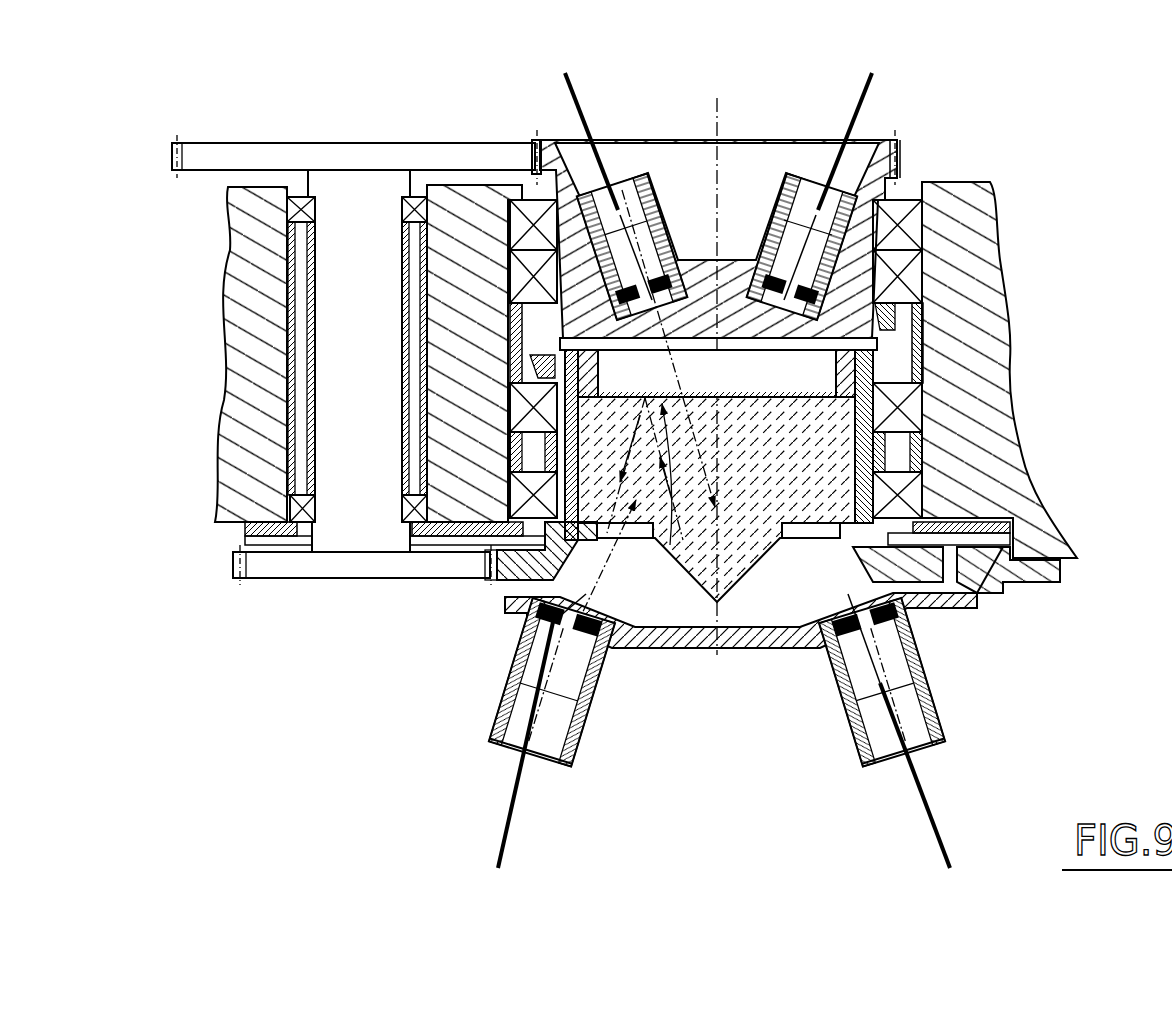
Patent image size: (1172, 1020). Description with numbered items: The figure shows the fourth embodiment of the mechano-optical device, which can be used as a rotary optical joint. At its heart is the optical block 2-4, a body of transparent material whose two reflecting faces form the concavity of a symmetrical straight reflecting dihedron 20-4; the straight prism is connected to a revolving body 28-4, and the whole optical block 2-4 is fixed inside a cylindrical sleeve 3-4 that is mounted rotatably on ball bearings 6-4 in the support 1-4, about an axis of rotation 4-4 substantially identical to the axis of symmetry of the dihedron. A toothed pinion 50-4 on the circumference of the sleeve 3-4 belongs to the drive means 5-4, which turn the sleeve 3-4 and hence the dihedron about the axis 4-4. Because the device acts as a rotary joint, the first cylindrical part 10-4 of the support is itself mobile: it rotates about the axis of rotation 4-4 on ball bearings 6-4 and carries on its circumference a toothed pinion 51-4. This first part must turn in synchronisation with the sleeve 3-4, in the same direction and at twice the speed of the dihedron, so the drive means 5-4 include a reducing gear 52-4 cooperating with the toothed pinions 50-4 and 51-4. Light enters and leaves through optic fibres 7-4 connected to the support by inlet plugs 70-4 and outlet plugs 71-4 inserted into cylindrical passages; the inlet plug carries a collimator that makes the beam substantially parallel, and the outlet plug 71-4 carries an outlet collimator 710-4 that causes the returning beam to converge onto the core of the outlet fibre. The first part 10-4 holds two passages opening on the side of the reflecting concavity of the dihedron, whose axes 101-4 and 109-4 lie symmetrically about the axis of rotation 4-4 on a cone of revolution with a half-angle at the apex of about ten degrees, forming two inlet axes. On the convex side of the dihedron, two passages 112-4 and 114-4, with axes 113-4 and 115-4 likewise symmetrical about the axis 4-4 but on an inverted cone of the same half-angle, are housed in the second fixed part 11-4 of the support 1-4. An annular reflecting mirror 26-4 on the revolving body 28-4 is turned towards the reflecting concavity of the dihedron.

The support 1-4 is at (992, 327).
The optical block 2-4 is at (814, 492).
The cylindrical sleeve 3-4 is at (935, 600).
The axis of rotation 4-4 is at (717, 100).
The drive means 5-4 is at (218, 333).
The ball bearings 6-4 is at (920, 274).
The optic fibre 7-4 is at (874, 72).
The first cylindrical part 10-4 is at (716, 373).
The second fixed part 11-4 is at (1000, 597).
The reflecting dihedron 20-4 is at (781, 548).
The annular reflecting mirror 26-4 is at (664, 545).
The revolving body 28-4 is at (862, 447).
The toothed pinion 50-4 is at (503, 598).
The toothed pinion 51-4 is at (532, 150).
The reducing gear 52-4 is at (336, 412).
The inlet plug 70-4 is at (773, 207).
The outlet plug 71-4 is at (547, 694).
The inlet axis 101-4 is at (650, 240).
The inlet axis 109-4 is at (790, 272).
The passage 112-4 is at (531, 751).
The outlet axis 113-4 is at (525, 672).
The passage 114-4 is at (903, 751).
The outlet axis 115-4 is at (917, 704).
The outlet collimator 710-4 is at (600, 648).